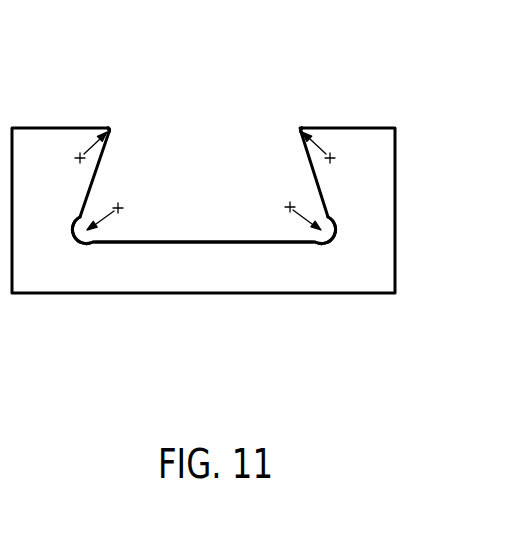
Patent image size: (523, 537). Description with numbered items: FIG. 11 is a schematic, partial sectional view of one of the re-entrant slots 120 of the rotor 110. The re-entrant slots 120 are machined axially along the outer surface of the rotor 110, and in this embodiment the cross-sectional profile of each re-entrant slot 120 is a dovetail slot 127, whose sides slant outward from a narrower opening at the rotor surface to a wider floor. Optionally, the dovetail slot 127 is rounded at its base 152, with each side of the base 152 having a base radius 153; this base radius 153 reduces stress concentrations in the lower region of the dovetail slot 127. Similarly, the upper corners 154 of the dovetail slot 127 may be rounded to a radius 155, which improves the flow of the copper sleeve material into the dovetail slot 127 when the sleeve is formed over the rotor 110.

The rotor 110 is at (367, 218).
The re-entrant slot 120 is at (170, 172).
The dovetail slot 127 is at (235, 140).
The base 152 is at (195, 240).
The base radius 153 is at (105, 218).
The upper corner 154 is at (108, 127).
The radius 155 is at (88, 142).